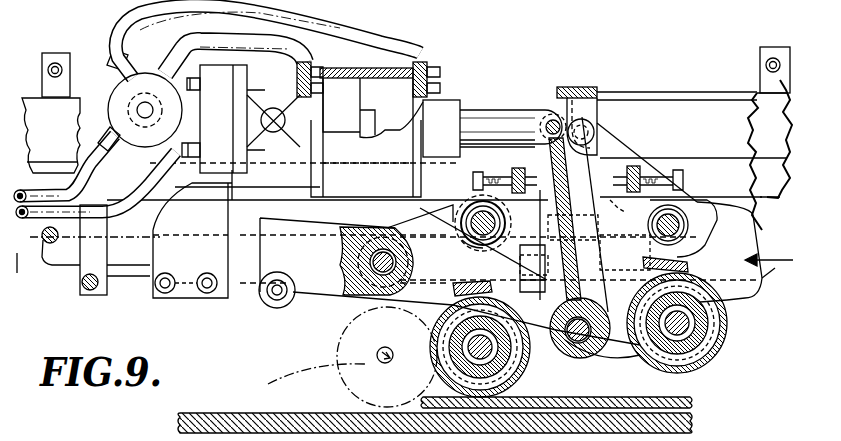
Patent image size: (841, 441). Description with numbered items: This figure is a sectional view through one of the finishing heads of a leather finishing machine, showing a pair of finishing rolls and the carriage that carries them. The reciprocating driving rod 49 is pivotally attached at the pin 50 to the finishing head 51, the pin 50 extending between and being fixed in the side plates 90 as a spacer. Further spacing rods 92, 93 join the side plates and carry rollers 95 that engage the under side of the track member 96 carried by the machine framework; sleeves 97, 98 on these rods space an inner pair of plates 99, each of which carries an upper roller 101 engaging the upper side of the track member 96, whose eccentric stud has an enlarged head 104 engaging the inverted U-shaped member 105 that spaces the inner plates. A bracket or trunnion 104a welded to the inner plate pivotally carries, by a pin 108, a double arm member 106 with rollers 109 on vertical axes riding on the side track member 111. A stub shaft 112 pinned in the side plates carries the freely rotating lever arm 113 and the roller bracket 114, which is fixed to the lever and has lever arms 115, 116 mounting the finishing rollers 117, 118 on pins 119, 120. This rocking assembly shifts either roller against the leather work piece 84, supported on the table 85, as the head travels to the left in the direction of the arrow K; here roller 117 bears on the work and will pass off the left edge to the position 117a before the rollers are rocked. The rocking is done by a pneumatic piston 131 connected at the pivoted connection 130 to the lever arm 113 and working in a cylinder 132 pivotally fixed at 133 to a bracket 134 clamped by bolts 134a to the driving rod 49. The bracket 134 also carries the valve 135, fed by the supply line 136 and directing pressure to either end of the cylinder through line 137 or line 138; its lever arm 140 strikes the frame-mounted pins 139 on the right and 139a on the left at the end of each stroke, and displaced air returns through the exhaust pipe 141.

The driving rod 49 is at (130, 283).
The pin 50 is at (357, 298).
The finishing head 51 is at (410, 222).
The leather work piece 84 is at (700, 401).
The table 85 is at (702, 422).
The side plate 90 is at (760, 317).
The rod 92 is at (470, 224).
The rod 93 is at (690, 231).
The roller 95 is at (477, 190).
The track member 96 is at (449, 190).
The sleeve 97 is at (466, 239).
The sleeve 98 is at (690, 240).
The plate 99 is at (606, 147).
The upper roller 101 is at (599, 102).
The enlarged head 104 is at (592, 132).
The bracket 104a is at (600, 195).
The inverted U-shaped member 105 is at (566, 87).
The double arm member 106 is at (507, 262).
The pin 108 is at (633, 179).
The roller 109 is at (543, 278).
The side track member 111 is at (777, 268).
The stub shaft 112 is at (597, 355).
The lever arm 113 is at (533, 150).
The bracket 114 is at (590, 358).
The lever arm 115 is at (525, 367).
The lever arm 116 is at (628, 358).
The finishing roller 117 is at (433, 313).
The roller position 117a is at (316, 381).
The finishing roller 118 is at (717, 353).
The pin 119 is at (437, 370).
The pin 120 is at (723, 333).
The pivoted connection 130 is at (549, 119).
The pneumatic piston 131 is at (362, 97).
The cylinder 132 is at (400, 132).
The pivot 133 is at (262, 122).
The bracket 134 is at (192, 234).
The bolt 134a is at (192, 298).
The valve 135 is at (173, 115).
The supply line 136 is at (33, 243).
The line 137 is at (347, 26).
The line 138 is at (351, 79).
The pin 139 is at (772, 57).
The pin 139a is at (57, 63).
The lever arm 140 is at (112, 62).
The exhaust pipe 141 is at (48, 190).
The arrow K is at (773, 254).